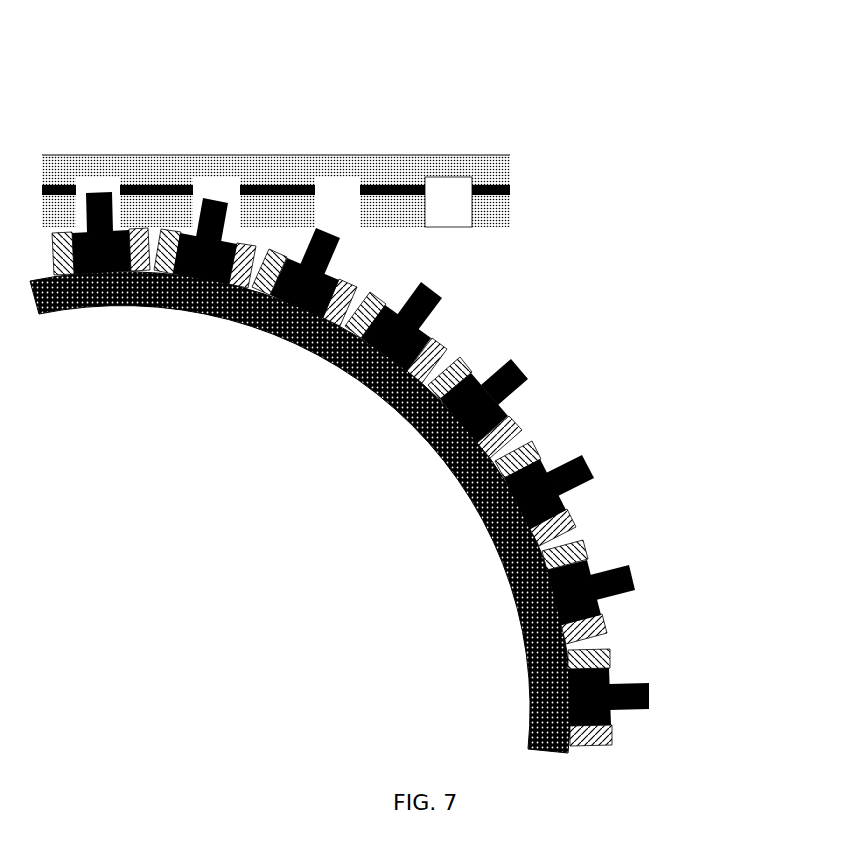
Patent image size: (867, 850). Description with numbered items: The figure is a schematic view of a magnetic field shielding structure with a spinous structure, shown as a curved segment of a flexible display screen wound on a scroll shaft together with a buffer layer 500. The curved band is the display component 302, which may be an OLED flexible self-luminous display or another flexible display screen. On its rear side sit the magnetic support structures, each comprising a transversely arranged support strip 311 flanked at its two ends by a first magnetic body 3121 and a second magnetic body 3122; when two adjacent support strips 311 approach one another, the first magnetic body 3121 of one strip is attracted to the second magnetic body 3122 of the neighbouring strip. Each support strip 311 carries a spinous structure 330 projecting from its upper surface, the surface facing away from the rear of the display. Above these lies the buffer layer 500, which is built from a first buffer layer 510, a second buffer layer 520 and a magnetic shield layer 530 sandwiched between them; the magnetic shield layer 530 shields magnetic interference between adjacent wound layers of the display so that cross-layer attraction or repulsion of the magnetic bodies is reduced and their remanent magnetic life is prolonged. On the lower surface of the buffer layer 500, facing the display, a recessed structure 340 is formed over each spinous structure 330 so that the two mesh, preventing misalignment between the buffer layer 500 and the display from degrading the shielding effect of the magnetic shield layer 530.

The buffer layer 500 is at (281, 166).
The first buffer layer 510 is at (472, 155).
The second buffer layer 520 is at (192, 205).
The magnetic shield layer 530 is at (382, 185).
The recessed structure 340 is at (437, 177).
The display component 302 is at (480, 517).
The spinous structure 330 is at (515, 385).
The support strip 311 is at (502, 412).
The first magnetic body 3121 is at (568, 523).
The second magnetic body 3122 is at (580, 553).